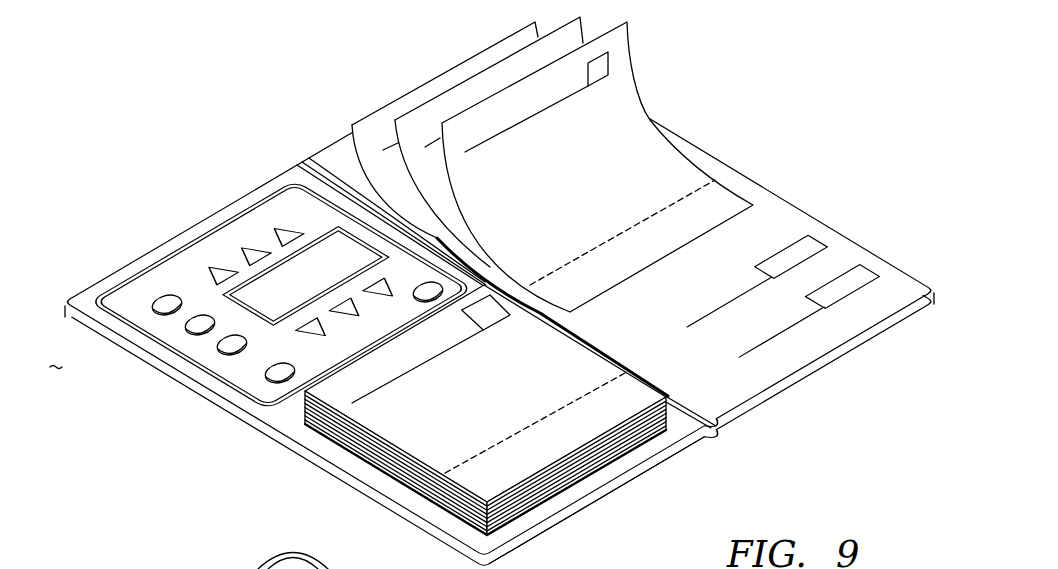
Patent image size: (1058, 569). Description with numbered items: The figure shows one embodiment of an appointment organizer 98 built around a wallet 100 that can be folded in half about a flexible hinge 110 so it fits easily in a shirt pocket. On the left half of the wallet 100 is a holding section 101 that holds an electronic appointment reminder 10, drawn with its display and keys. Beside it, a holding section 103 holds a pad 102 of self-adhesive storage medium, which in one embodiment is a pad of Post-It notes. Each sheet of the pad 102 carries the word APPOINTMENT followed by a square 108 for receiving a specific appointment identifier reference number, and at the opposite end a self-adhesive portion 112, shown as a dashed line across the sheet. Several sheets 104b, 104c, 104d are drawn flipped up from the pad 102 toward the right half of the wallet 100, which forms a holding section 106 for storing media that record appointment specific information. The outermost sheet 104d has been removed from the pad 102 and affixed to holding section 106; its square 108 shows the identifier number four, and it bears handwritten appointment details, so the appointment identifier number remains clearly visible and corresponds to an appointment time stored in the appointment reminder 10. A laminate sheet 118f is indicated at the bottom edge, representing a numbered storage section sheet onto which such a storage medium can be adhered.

The appointment organizer 98 is at (199, 172).
The appointment reminder 10 is at (153, 280).
The wallet 100 is at (556, 524).
The holding section 101 is at (171, 389).
The pad 102 is at (329, 443).
The holding section 103 is at (638, 491).
The storage medium 104b is at (407, 91).
The storage medium 104c is at (478, 72).
The storage medium 104d is at (597, 167).
The holding section 106 is at (612, 229).
The square 108 is at (614, 59).
The flexible hinge 110 is at (719, 430).
The self-adhesive portion 112 is at (730, 193).
The laminate sheet 118f is at (320, 567).